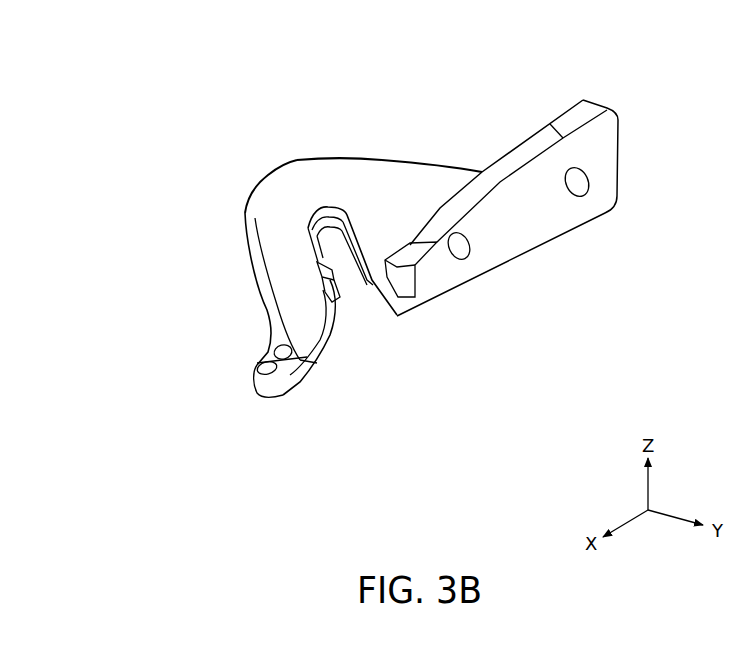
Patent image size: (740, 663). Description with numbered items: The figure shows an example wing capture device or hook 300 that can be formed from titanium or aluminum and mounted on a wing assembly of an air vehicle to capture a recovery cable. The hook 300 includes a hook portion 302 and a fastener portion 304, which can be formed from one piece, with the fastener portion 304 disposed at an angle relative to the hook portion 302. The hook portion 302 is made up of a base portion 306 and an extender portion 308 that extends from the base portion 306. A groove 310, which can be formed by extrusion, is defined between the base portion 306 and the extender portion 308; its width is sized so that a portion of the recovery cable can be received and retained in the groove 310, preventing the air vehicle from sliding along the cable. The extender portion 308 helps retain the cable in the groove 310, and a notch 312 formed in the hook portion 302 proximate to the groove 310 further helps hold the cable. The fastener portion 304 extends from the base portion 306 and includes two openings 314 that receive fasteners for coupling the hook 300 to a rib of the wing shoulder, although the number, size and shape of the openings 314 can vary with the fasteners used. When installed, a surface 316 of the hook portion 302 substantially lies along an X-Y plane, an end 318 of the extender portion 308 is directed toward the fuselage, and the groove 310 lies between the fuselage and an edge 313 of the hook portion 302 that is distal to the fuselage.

The hook 300 is at (247, 63).
The hook portion 302 is at (285, 148).
The fastener portion 304 is at (529, 268).
The base portion 306 is at (381, 138).
The extender portion 308 is at (248, 338).
The groove 310 is at (338, 268).
The notch 312 is at (337, 287).
The edge 313 is at (377, 157).
The openings 314 is at (573, 182).
The surface 316 is at (283, 200).
The end 318 is at (257, 393).